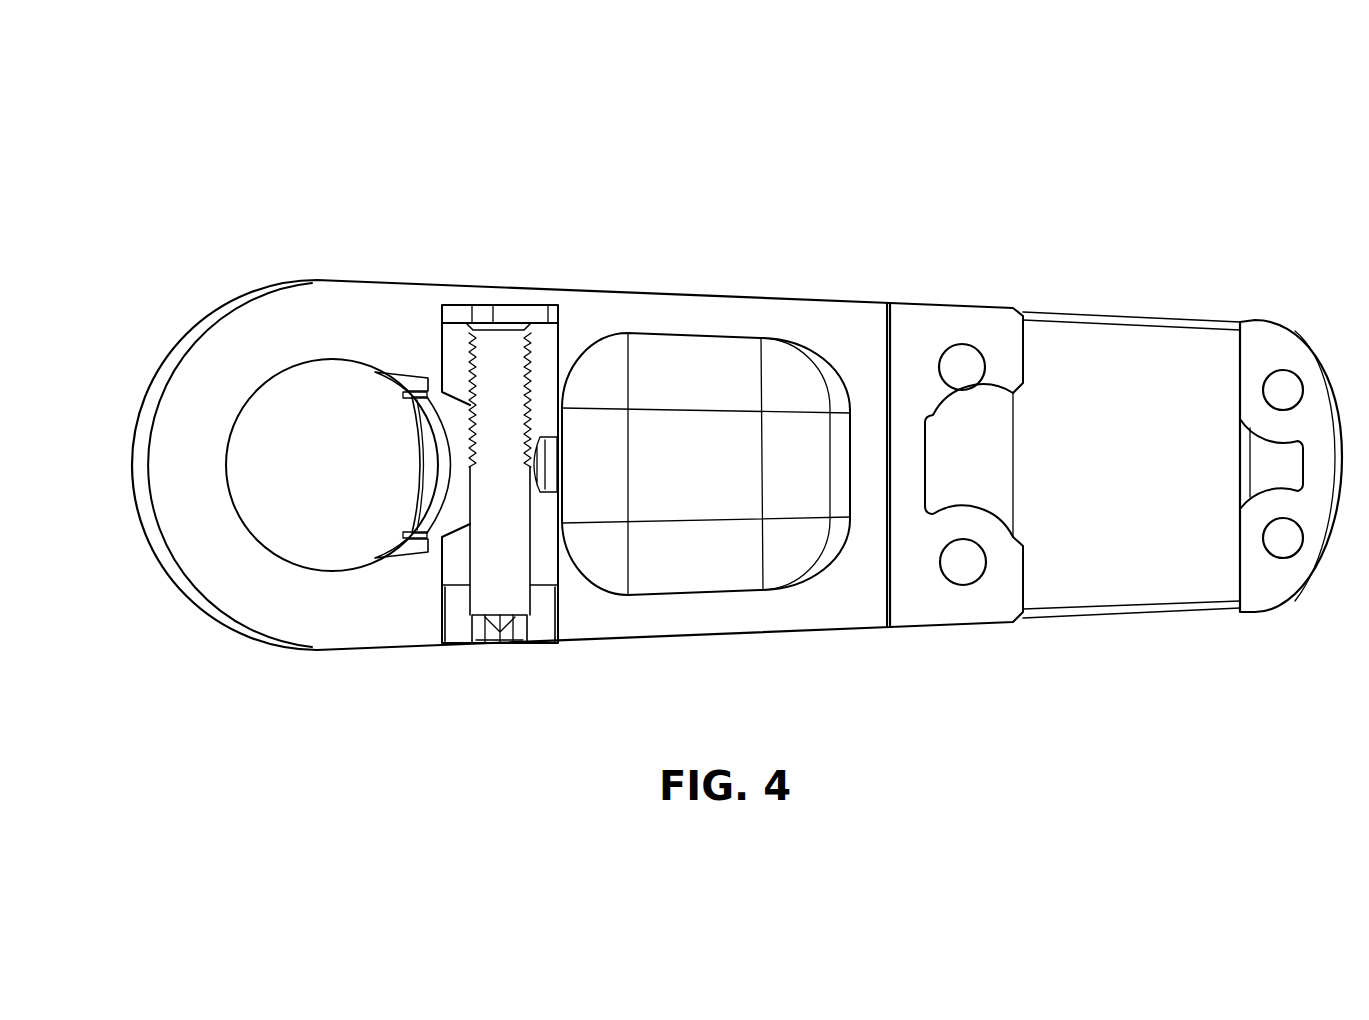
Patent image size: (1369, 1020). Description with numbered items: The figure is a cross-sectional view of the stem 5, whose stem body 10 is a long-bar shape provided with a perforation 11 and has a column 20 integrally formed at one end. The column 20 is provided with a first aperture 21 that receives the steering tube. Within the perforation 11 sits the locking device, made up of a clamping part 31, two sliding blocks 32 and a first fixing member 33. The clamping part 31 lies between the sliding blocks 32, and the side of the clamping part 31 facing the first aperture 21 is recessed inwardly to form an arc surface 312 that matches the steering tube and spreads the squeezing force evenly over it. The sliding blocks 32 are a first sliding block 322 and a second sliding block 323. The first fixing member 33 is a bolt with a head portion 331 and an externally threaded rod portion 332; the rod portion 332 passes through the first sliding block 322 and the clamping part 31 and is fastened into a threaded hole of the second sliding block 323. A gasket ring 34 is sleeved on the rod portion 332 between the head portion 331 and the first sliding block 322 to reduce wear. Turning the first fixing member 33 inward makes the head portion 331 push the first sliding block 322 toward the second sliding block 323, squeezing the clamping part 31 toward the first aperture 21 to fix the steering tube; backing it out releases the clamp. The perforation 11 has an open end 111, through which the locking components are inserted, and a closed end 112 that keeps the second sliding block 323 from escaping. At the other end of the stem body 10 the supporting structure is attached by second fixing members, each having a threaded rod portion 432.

The stem 5 is at (143, 98).
The stem body 10 is at (717, 610).
The perforation 11 is at (520, 317).
The open end 111 is at (440, 647).
The closed end 112 is at (478, 297).
The column 20 is at (310, 318).
The first aperture 21 is at (330, 491).
The clamping part 31 is at (441, 390).
The arc surface 312 is at (430, 435).
The sliding blocks 32 is at (648, 359).
The first sliding block 322 is at (630, 460).
The second sliding block 323 is at (550, 345).
The first fixing member 33 is at (494, 684).
The head portion 331 is at (460, 623).
The rod portion 332 is at (517, 658).
The gasket ring 34 is at (552, 535).
The rod portion 432 is at (962, 565).